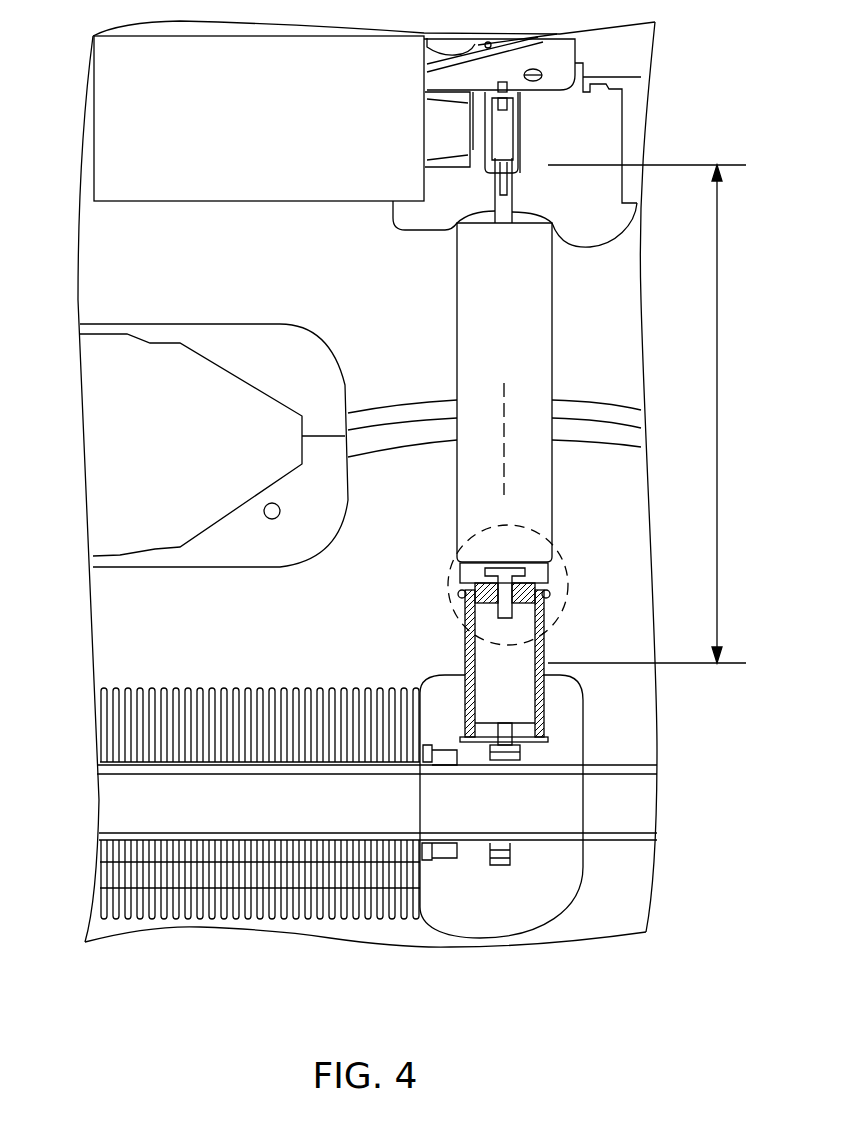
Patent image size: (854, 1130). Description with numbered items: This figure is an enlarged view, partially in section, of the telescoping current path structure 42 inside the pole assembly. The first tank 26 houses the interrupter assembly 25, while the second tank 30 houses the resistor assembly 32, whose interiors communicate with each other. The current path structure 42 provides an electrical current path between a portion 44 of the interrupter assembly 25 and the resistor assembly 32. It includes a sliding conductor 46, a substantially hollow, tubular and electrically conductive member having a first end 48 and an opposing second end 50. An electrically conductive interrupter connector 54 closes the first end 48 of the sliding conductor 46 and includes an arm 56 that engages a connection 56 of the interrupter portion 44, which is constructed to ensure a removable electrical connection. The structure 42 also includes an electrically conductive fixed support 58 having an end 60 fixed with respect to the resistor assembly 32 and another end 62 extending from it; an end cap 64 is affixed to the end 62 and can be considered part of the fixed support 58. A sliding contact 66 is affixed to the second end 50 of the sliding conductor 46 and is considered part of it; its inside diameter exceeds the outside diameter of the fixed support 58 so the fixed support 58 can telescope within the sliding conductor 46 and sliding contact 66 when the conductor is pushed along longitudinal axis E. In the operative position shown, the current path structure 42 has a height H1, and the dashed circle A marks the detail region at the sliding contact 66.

The interrupter assembly 25 is at (268, 128).
The first tank 26 is at (98, 316).
The second tank 30 is at (102, 588).
The resistor assembly 32 is at (245, 922).
The current path structure 42 is at (609, 349).
The portion of the interrupter assembly 44 is at (606, 128).
The sliding conductor 46 is at (473, 270).
The first end of the sliding conductor 48 is at (553, 228).
The second end of the sliding conductor 50 is at (462, 571).
The interrupter connector 54 is at (512, 214).
The arm / connection 56 is at (522, 130).
The fixed support 58 is at (541, 681).
The end of the fixed support 60 is at (466, 718).
The end of the fixed support 62 is at (545, 590).
The end cap 64 is at (463, 625).
The sliding contact 66 is at (458, 590).
The longitudinal axis E is at (503, 457).
The detail region A is at (565, 548).
The height H1 is at (660, 414).